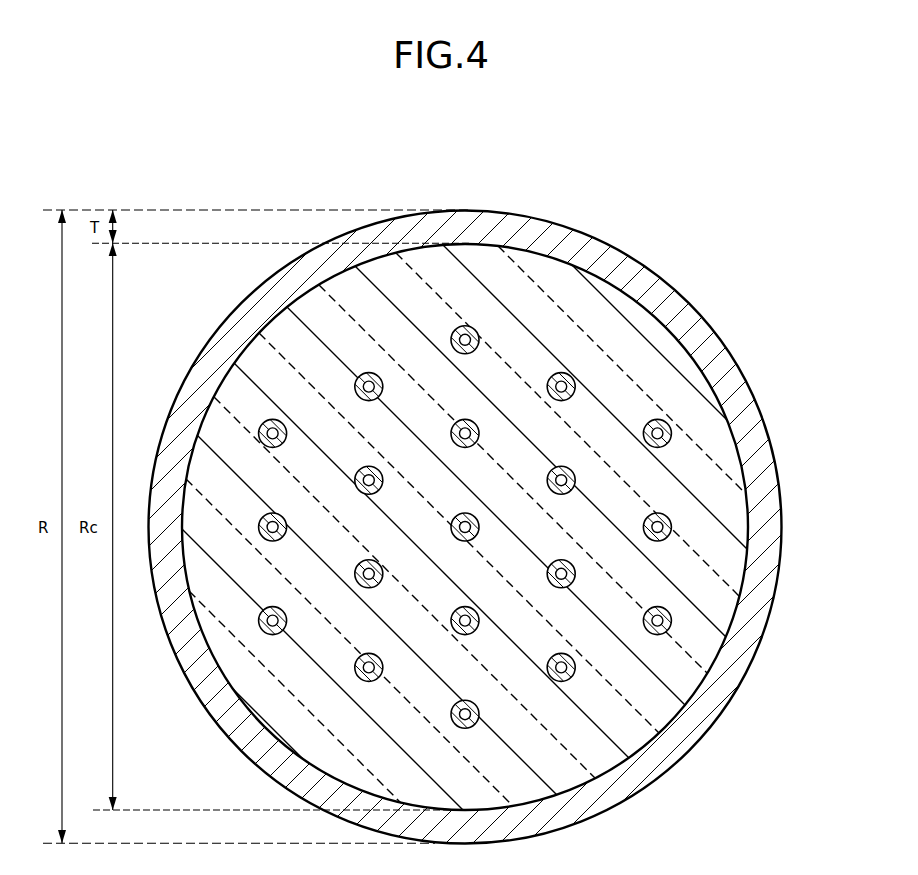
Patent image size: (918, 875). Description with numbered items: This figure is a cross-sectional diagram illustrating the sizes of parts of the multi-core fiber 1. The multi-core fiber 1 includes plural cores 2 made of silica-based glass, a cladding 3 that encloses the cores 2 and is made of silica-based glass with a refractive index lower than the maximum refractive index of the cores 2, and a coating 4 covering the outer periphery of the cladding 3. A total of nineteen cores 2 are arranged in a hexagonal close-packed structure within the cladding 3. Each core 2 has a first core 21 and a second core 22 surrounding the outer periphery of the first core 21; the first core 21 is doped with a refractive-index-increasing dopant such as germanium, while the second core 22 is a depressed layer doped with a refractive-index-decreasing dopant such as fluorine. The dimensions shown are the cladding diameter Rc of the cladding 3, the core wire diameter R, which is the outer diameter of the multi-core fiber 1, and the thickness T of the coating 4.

The multi-core fiber 1 is at (653, 238).
The core 2 is at (530, 158).
The first core 21 is at (462, 333).
The second core 22 is at (473, 327).
The cladding 3 is at (725, 527).
The coating 4 is at (628, 776).